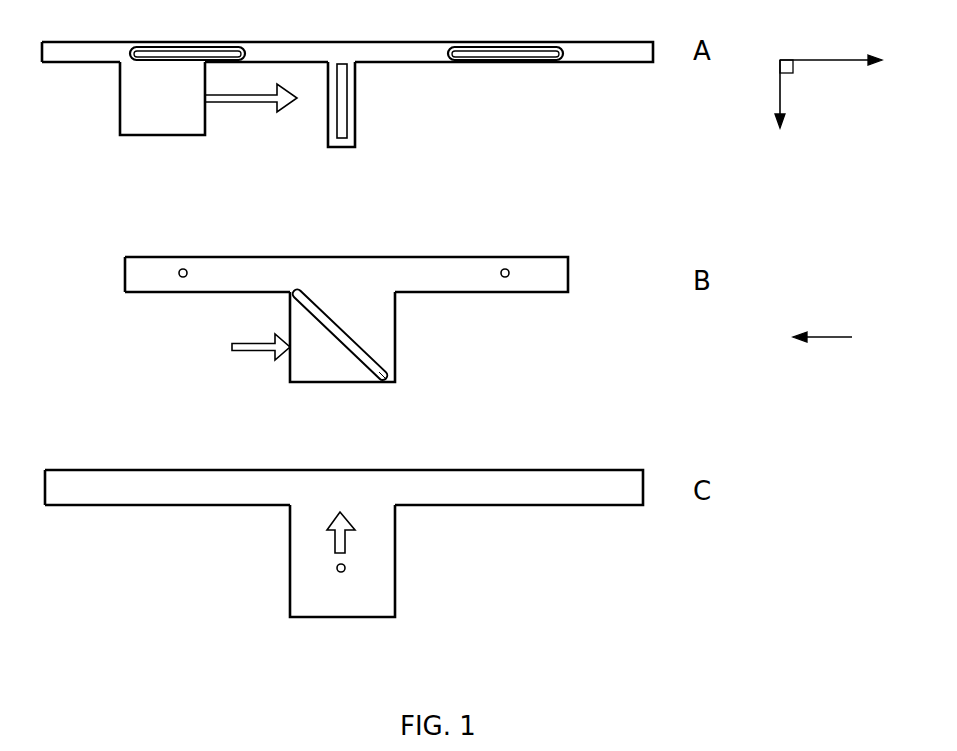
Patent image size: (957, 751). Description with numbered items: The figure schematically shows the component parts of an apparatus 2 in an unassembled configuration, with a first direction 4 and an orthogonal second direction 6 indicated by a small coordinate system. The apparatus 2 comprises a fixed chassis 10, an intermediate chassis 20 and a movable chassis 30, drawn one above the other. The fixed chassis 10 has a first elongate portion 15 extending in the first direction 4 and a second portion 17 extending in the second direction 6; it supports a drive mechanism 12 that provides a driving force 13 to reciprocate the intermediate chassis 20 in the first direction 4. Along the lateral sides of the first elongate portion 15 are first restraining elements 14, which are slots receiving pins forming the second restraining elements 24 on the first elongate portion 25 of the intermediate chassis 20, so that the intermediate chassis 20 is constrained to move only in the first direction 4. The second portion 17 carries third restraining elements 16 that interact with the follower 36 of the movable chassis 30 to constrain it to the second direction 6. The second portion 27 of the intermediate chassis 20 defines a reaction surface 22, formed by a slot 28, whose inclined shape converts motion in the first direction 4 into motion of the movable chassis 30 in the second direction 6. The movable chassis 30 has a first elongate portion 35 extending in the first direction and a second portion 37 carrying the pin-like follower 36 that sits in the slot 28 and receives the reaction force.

The fixed chassis 10 is at (650, 42).
The drive mechanism 12 is at (155, 135).
The driving force 13 is at (238, 102).
The first restraining elements 14 is at (200, 52).
The first elongate portion 15 is at (60, 50).
The third restraining elements 16 is at (342, 97).
The second portion 17 is at (355, 133).
The first direction 4 is at (848, 57).
The second direction 6 is at (780, 88).
The apparatus 2 is at (833, 338).
The intermediate chassis 20 is at (562, 268).
The reaction surface 22 is at (329, 345).
The second restraining elements 24 is at (186, 269).
The first elongate portion 25 is at (148, 257).
The second portion 27 is at (396, 323).
The slot 28 is at (378, 378).
The movable chassis 30 is at (622, 477).
The first elongate portion 35 is at (150, 505).
The follower 36 is at (341, 573).
The second portion 37 is at (397, 548).